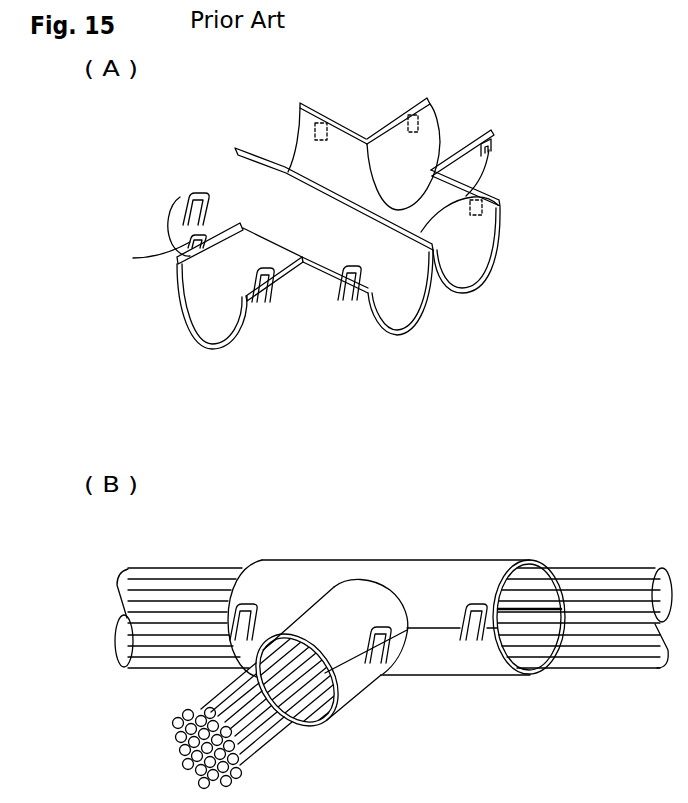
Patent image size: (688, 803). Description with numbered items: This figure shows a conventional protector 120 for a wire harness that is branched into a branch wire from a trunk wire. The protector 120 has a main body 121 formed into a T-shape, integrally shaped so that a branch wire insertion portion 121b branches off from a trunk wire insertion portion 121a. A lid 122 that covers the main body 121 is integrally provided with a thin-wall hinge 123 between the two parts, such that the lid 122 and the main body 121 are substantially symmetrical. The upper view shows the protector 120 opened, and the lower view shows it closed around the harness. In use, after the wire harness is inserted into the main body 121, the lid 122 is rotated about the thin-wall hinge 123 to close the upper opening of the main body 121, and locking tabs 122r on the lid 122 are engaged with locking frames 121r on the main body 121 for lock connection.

The protector 120 is at (208, 128).
The main body 121 is at (401, 387).
The trunk wire insertion portion 121a is at (397, 330).
The branch wire insertion portion 121b is at (260, 312).
The locking frames 121r is at (180, 208).
The lid 122 is at (474, 276).
The locking tabs 122r is at (402, 113).
The thin-wall hinge 123 is at (472, 200).